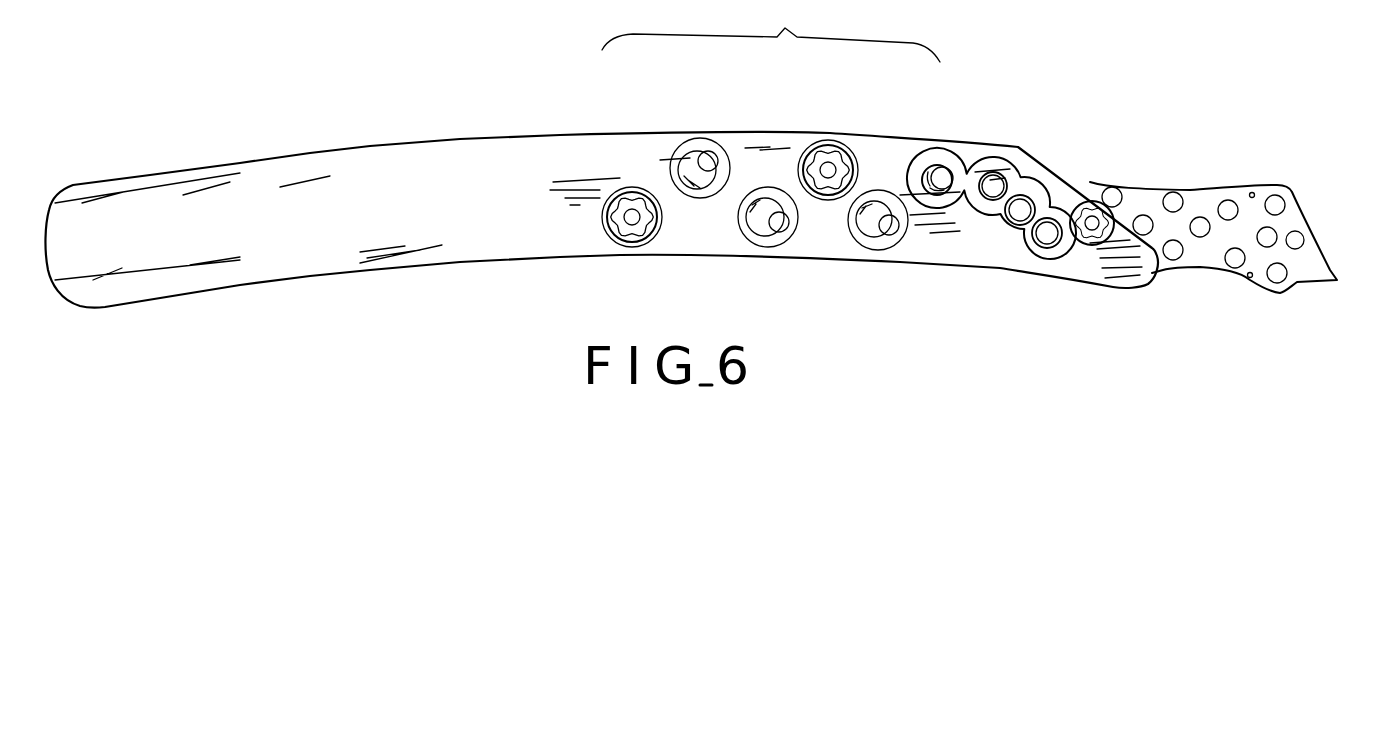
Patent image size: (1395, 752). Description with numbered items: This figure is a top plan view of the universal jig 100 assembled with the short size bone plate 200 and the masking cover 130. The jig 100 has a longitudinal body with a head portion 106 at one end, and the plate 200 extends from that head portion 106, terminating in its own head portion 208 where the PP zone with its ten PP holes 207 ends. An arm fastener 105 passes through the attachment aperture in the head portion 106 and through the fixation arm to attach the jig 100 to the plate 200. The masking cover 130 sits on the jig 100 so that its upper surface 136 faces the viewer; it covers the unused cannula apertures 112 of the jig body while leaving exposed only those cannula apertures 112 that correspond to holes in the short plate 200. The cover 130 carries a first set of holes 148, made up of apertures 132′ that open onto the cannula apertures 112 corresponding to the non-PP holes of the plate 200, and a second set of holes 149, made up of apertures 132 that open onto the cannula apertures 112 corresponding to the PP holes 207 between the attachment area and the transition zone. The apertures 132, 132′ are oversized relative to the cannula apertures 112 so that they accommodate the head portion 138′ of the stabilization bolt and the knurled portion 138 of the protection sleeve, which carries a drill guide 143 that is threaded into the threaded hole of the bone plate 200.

The universal jig 100 is at (463, 283).
The masking cover 130 is at (468, 153).
The upper surface 136 is at (350, 227).
The head portion 138′ is at (632, 195).
The knurled portion 138 is at (840, 155).
The drill guide 143 is at (712, 157).
The apertures 132′ is at (698, 195).
The first set of holes 148 is at (771, 31).
The second set of holes 149 is at (1088, 153).
The cannula apertures 112 is at (1033, 243).
The apertures 132 is at (1060, 259).
The arm fastener 105 is at (1094, 203).
The head portion 106 is at (1142, 298).
The short size plate 200 is at (1230, 277).
The PP holes 207 is at (1228, 207).
The head portion 208 is at (1312, 193).